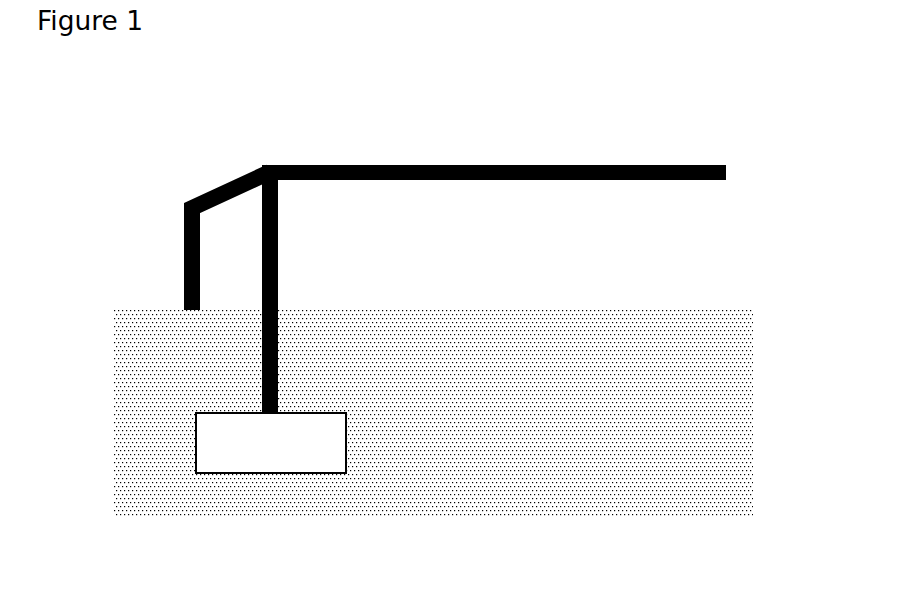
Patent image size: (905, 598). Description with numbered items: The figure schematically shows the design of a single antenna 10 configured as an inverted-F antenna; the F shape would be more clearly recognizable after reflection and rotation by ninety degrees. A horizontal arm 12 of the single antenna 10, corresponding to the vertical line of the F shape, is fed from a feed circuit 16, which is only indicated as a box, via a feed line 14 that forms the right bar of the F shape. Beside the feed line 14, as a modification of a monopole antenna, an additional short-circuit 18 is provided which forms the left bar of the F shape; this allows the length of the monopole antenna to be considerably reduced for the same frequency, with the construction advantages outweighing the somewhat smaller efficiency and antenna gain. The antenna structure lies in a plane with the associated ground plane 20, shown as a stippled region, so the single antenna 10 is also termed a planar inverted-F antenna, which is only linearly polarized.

The single antenna 10 is at (438, 216).
The arm 12 is at (577, 165).
The feed line 14 is at (278, 261).
The feed circuit 16 is at (278, 465).
The short-circuit 18 is at (185, 263).
The ground plane 20 is at (728, 378).